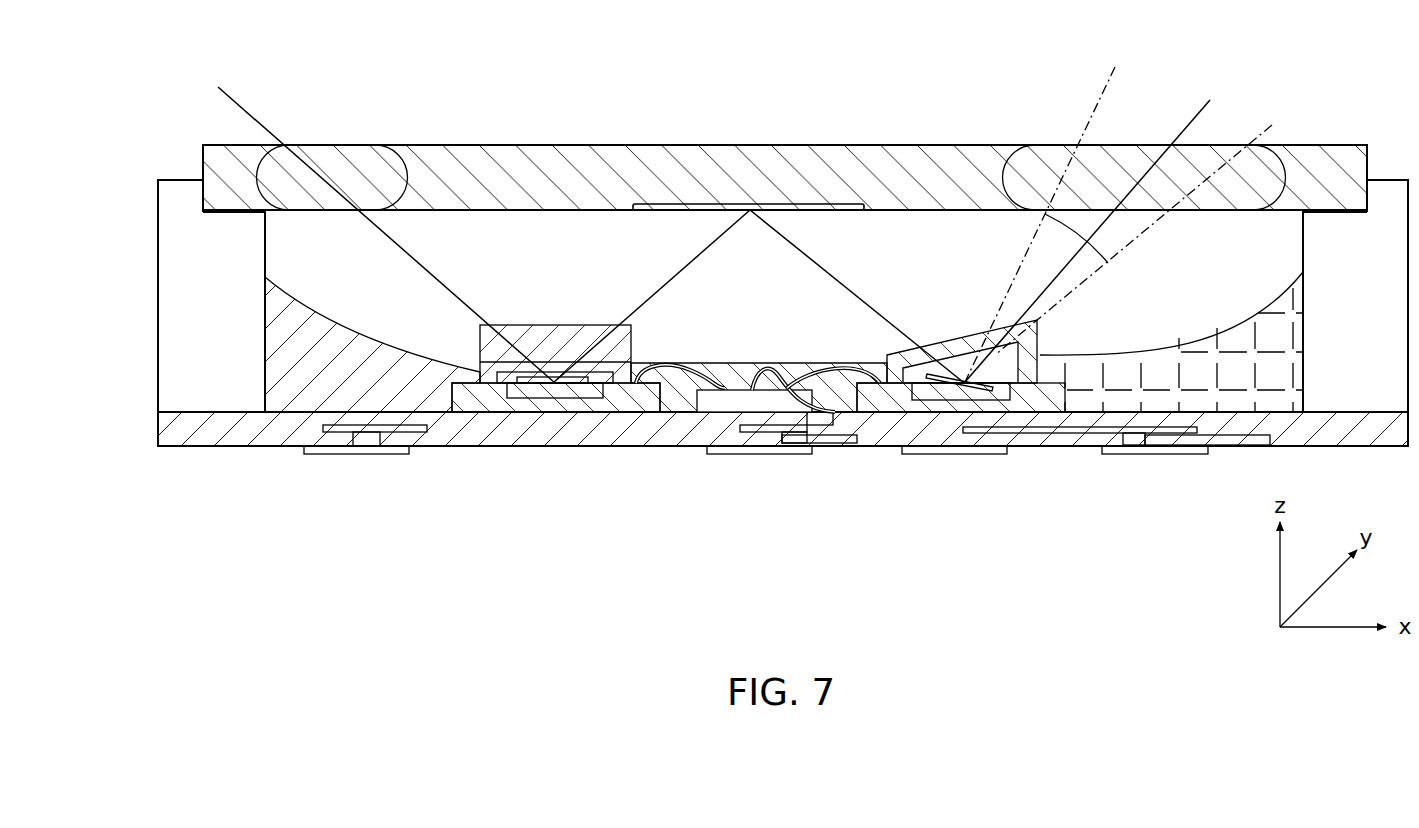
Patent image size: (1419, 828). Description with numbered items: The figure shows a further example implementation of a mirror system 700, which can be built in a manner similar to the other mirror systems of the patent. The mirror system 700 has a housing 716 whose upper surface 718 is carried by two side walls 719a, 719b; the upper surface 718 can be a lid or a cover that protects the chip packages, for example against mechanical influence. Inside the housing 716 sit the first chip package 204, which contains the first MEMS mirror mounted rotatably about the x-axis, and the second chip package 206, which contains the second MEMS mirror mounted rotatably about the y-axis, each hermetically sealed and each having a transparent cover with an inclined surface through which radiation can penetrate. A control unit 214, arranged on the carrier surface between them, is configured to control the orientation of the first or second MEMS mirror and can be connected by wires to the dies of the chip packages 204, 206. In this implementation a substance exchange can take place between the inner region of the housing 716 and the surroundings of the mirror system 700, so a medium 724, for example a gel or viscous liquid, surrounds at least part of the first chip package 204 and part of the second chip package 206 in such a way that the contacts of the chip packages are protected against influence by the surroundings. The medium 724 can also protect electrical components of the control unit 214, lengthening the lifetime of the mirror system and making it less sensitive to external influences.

The mirror system 700 is at (1045, 108).
The housing 716 is at (178, 163).
The upper surface 718 is at (118, 145).
The side wall 719a is at (158, 300).
The side wall 719b is at (1303, 268).
The medium 724 is at (343, 353).
The first chip package 204 is at (548, 318).
The control unit 214 is at (733, 355).
The second chip package 206 is at (947, 318).